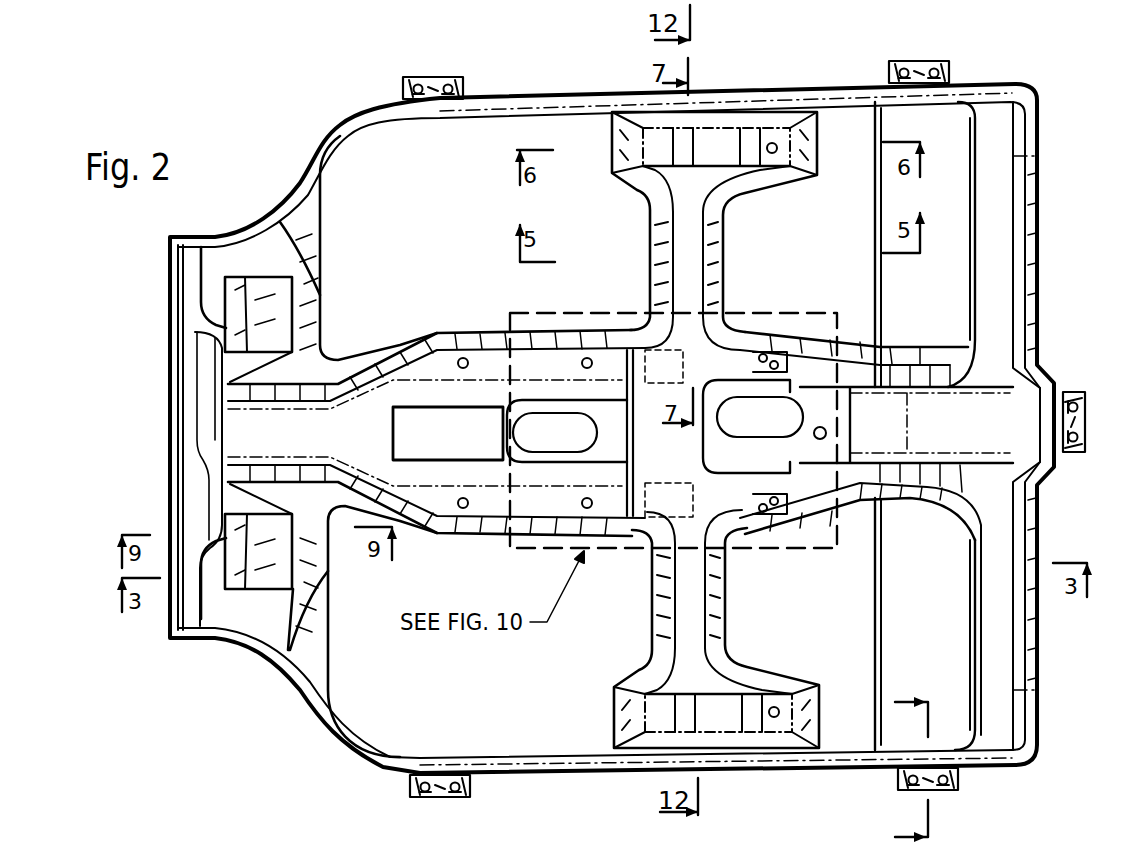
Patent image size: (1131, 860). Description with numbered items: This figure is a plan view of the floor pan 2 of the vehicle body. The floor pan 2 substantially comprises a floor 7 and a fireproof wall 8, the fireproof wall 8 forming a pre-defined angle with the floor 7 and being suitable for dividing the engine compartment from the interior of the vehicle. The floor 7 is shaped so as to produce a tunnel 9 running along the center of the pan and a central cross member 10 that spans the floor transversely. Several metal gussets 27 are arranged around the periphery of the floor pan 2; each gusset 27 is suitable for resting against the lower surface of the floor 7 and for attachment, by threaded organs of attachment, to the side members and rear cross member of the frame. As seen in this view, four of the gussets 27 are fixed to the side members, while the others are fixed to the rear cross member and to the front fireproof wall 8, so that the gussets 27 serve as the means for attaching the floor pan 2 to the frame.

The floor pan 2 is at (240, 680).
The floor 7 is at (475, 216).
The fireproof wall 8 is at (290, 340).
The tunnel 9 is at (591, 340).
The central cross member 10 is at (727, 269).
The metal gussets 27 is at (400, 88).